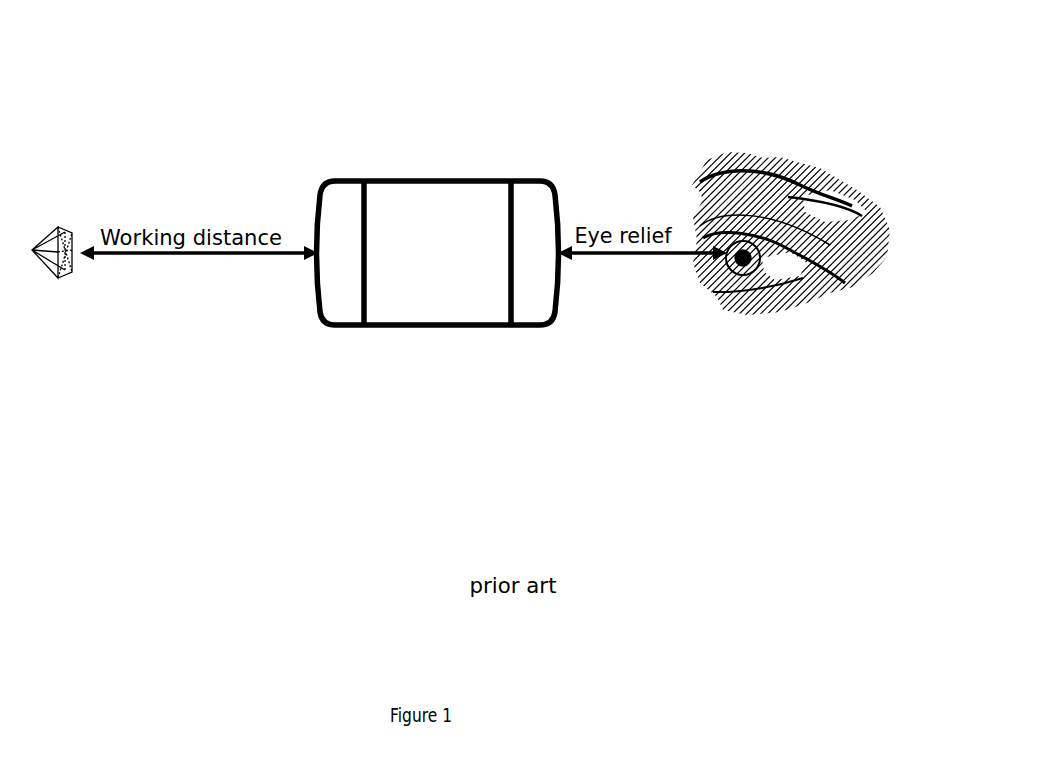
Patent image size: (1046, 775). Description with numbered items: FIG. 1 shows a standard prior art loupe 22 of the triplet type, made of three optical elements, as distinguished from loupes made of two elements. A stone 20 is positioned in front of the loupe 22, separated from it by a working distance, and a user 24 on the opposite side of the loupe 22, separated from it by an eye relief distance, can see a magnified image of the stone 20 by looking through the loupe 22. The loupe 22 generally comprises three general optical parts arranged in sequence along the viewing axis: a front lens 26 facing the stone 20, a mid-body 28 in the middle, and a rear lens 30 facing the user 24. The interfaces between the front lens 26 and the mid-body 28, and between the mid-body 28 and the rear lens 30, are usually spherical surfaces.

The stone 20 is at (40, 223).
The loupe 22 is at (435, 145).
The user 24 is at (725, 143).
The front lens 26 is at (337, 328).
The mid-body 28 is at (427, 328).
The rear lens 30 is at (518, 328).